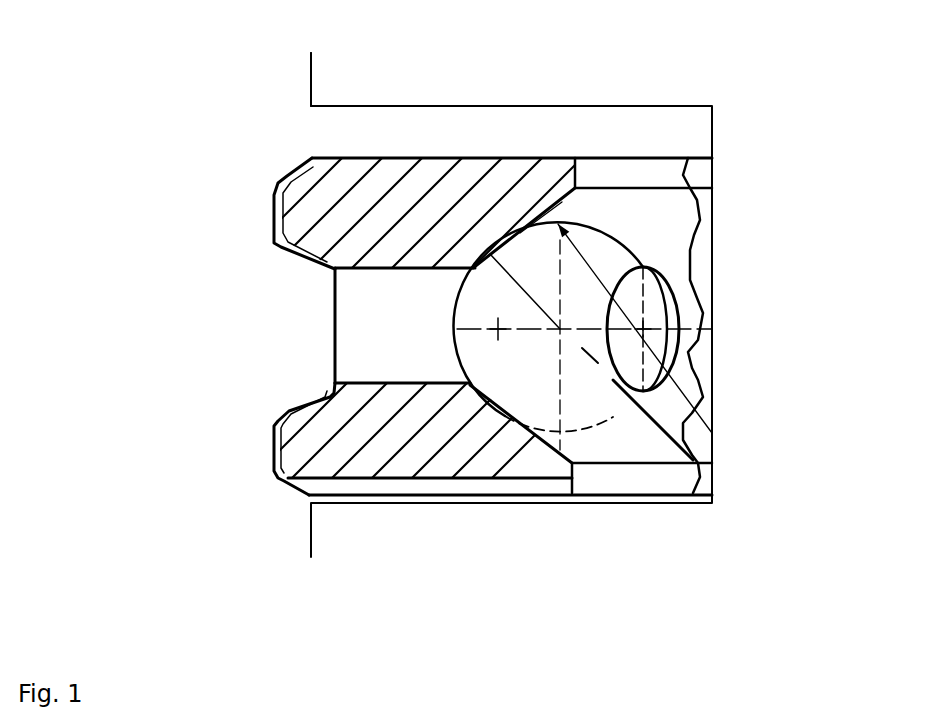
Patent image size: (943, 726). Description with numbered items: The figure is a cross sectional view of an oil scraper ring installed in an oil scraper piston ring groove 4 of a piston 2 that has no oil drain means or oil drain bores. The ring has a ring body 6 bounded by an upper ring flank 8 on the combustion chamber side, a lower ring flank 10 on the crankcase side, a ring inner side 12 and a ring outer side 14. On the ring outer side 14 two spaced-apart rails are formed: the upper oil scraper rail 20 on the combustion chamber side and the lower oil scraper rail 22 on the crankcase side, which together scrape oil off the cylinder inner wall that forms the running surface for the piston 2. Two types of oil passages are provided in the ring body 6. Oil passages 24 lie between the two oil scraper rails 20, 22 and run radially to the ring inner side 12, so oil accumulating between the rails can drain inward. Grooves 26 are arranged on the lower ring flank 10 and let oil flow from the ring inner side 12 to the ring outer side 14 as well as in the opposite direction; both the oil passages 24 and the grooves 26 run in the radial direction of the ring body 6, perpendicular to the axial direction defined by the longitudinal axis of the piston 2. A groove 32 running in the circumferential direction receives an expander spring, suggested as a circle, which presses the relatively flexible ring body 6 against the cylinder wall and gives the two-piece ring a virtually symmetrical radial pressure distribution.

The piston 2 is at (393, 83).
The oil scraper piston ring groove 4 is at (667, 127).
The ring body 6 is at (372, 238).
The upper ring flank 8 is at (468, 156).
The lower ring flank 10 is at (350, 497).
The ring inner side 12 is at (655, 232).
The ring outer side 14 is at (364, 325).
The upper oil scraper rail 20 is at (270, 223).
The lower oil scraper rail 22 is at (270, 452).
The oil passages 24 is at (384, 349).
The grooves 26 is at (432, 481).
The groove 32 is at (577, 442).